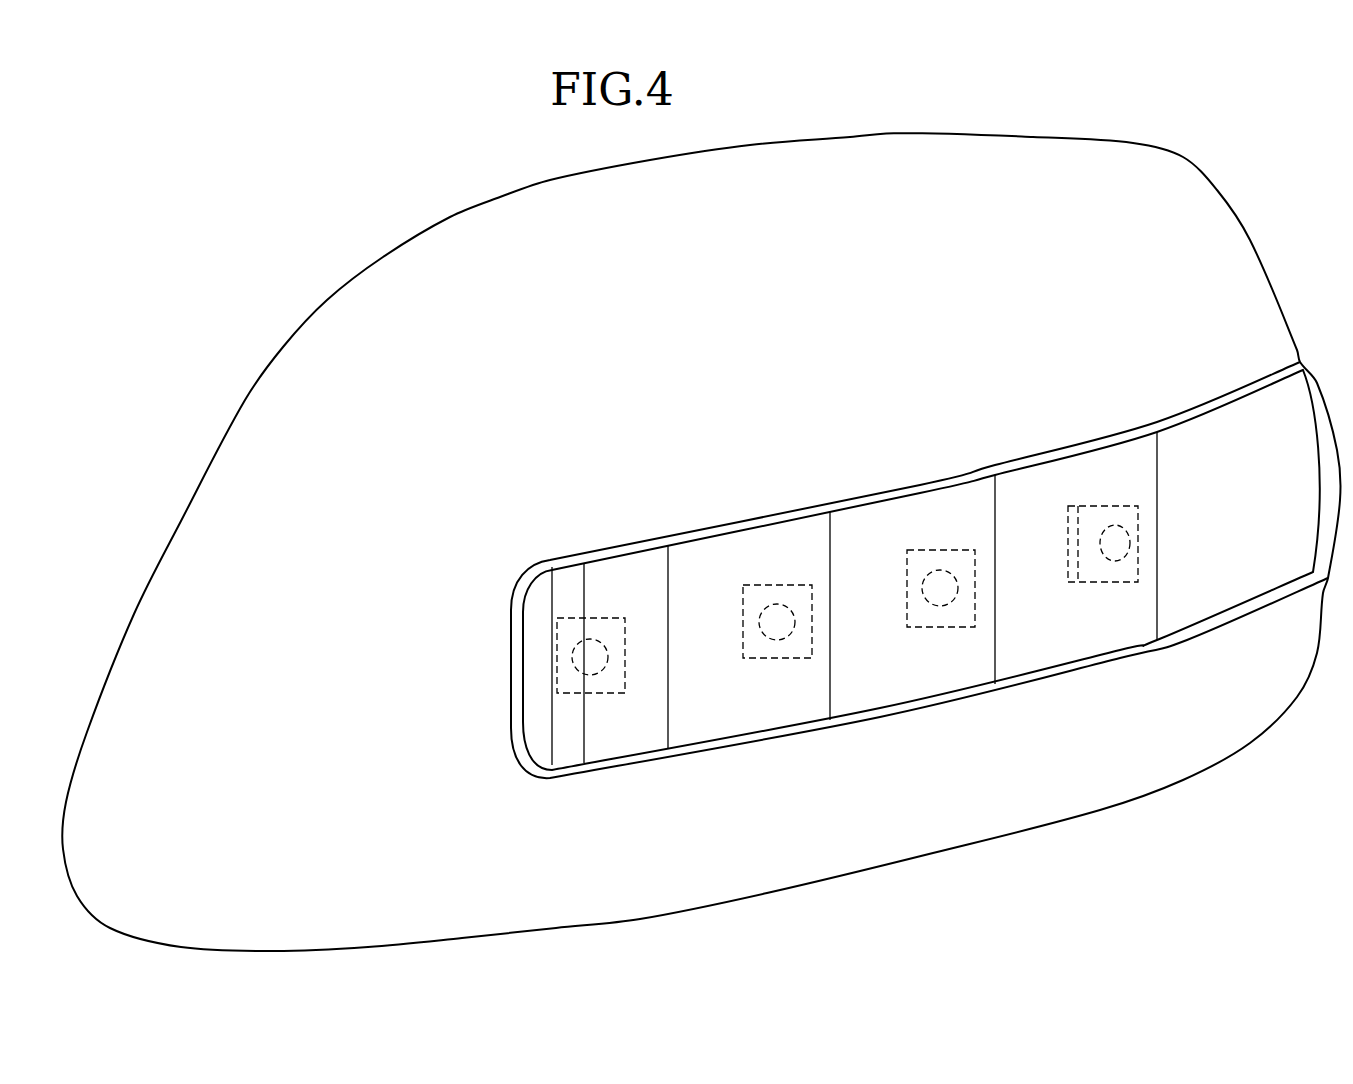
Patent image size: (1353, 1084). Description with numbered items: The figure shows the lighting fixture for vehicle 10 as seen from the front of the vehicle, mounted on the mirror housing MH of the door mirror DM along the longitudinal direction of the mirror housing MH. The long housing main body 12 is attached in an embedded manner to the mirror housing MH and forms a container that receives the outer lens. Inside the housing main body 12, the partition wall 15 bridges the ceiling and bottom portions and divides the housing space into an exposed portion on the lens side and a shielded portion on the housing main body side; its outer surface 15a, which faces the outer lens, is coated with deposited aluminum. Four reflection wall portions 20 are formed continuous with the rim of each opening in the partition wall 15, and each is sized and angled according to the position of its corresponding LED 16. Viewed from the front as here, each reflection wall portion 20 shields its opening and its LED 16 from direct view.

The lighting fixture for vehicle 10 is at (919, 572).
The housing main body 12 is at (1073, 668).
The partition wall 15 is at (1020, 655).
The outer surface 15a is at (863, 692).
The LED 16 is at (600, 695).
The reflection wall portion 20 is at (640, 747).
The mirror housing MH is at (1012, 163).
The door mirror DM is at (701, 503).